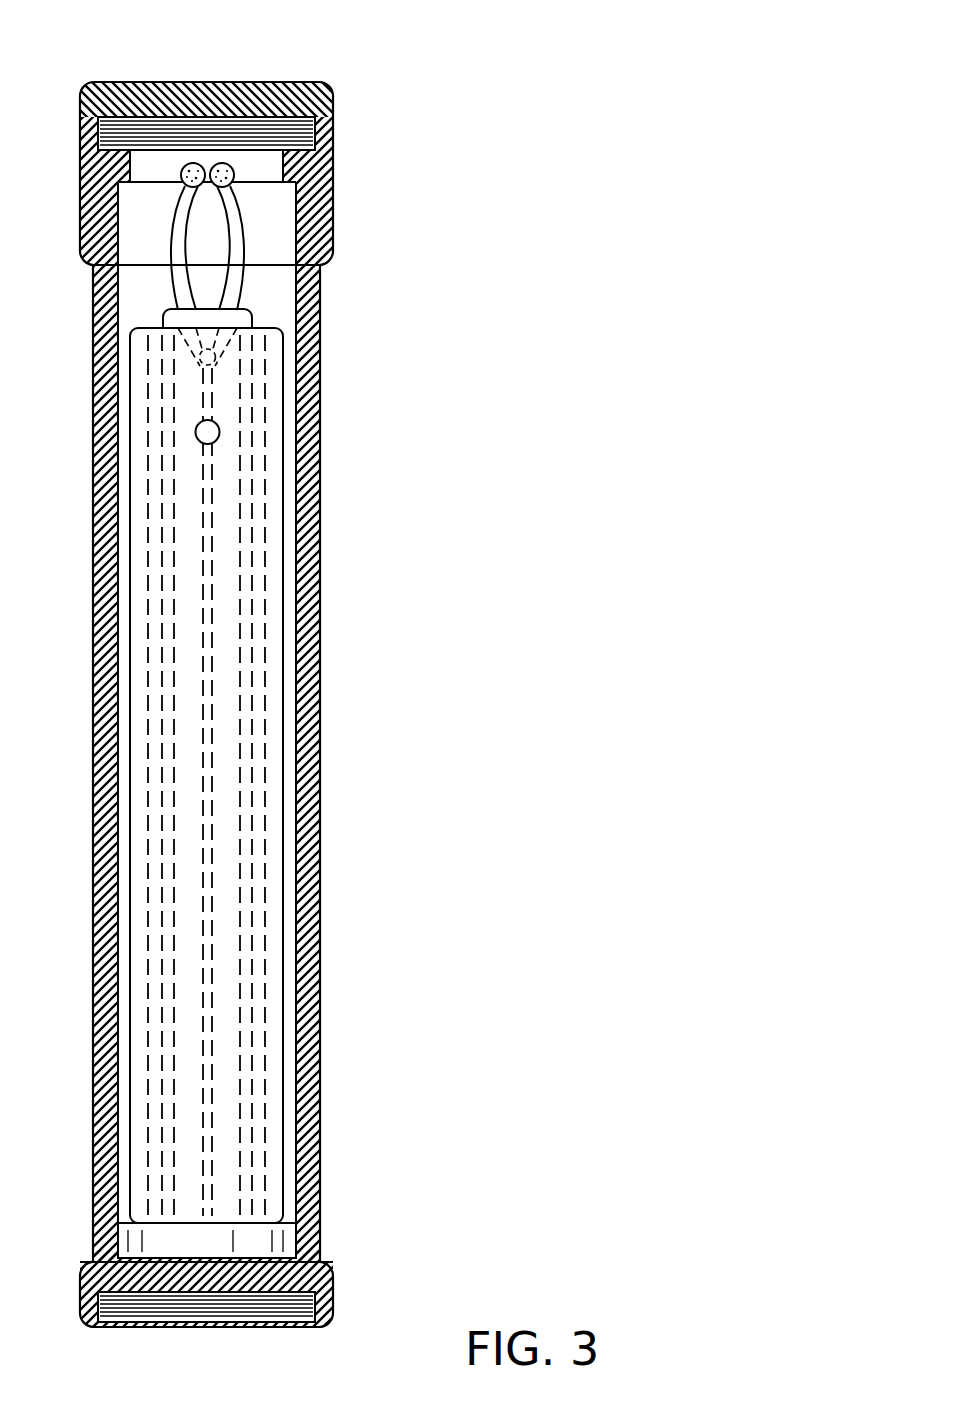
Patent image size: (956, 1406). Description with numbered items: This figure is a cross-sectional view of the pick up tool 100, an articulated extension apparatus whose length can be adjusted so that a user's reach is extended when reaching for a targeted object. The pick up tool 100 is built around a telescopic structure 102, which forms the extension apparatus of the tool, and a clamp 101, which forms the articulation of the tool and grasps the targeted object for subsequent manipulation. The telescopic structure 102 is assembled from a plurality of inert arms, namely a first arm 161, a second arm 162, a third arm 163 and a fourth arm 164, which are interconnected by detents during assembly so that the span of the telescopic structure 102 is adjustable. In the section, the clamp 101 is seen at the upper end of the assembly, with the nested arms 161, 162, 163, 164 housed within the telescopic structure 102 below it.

The pick up tool 100 is at (560, 143).
The clamp 101 is at (243, 258).
The telescopic structure 102 is at (320, 530).
The first arm 161 is at (320, 607).
The second arm 162 is at (283, 400).
The third arm 163 is at (250, 703).
The fourth arm 164 is at (245, 310).